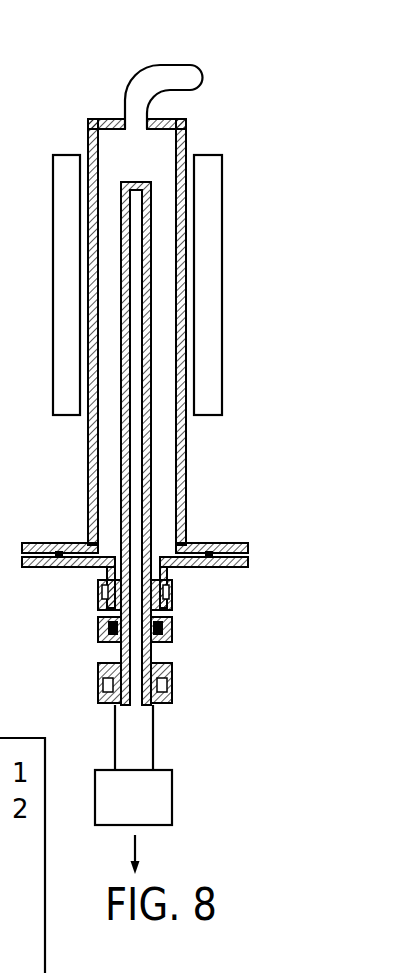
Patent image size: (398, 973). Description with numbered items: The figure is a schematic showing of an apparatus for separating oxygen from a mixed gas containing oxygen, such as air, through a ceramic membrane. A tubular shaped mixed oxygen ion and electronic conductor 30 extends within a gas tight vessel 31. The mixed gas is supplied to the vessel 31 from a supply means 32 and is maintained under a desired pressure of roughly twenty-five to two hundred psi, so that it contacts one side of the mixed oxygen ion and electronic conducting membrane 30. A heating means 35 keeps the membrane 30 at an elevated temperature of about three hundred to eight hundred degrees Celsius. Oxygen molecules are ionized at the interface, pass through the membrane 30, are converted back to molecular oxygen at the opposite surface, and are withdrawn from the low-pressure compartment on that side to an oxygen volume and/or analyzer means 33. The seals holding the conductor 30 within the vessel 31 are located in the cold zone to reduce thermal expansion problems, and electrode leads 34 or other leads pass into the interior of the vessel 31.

The mixed oxygen ion and electronic conductor 30 is at (151, 497).
The gas tight vessel 31 is at (184, 452).
The supply means 32 is at (255, 77).
The oxygen volume and/or analyzer means 33 is at (150, 807).
The electrode leads 34 is at (170, 570).
The heating means 35 is at (215, 285).